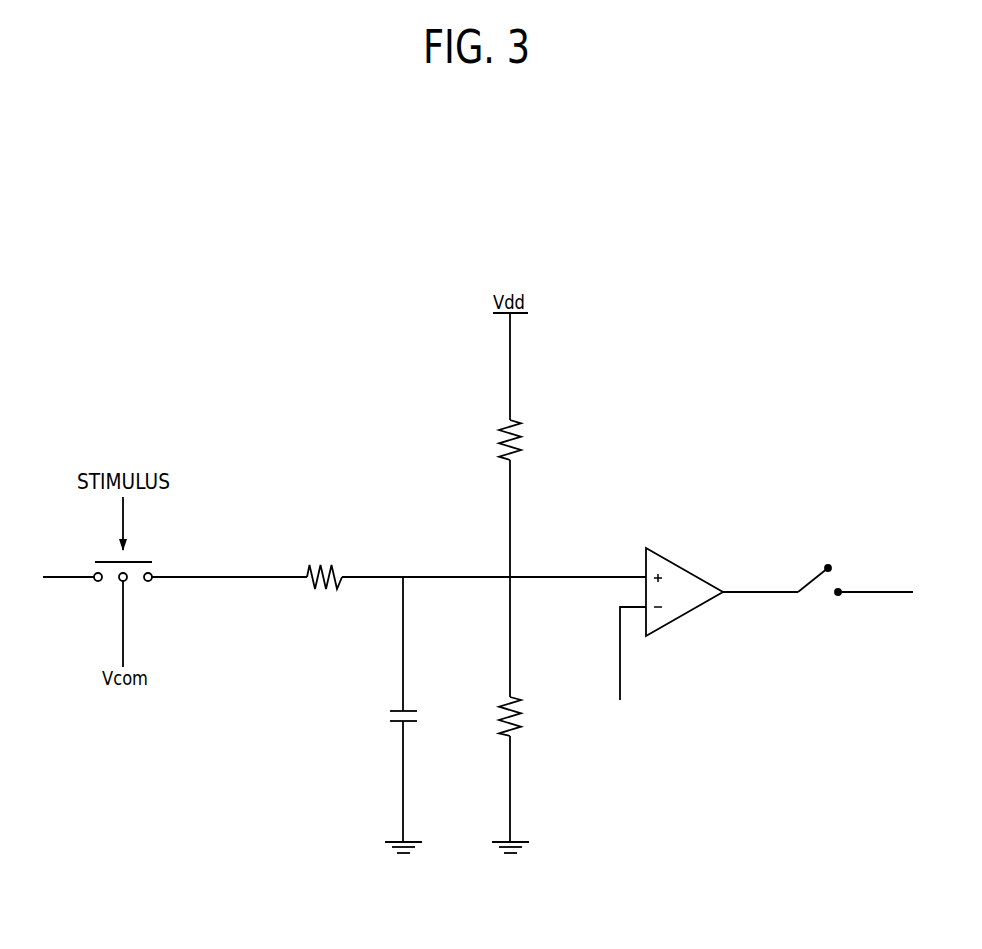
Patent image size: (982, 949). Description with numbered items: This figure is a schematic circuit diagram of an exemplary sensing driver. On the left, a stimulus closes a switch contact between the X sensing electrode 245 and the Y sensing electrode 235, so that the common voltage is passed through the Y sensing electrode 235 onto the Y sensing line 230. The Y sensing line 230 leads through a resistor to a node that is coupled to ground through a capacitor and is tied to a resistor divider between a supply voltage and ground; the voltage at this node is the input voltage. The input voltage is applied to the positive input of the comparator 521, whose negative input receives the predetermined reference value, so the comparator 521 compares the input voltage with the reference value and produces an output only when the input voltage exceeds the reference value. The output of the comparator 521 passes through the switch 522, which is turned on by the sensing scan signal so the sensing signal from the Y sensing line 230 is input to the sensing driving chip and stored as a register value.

The Y sensing line 230 is at (242, 577).
The Y sensing electrode 235 is at (151, 582).
The X sensing electrode 245 is at (95, 582).
The comparator 521 is at (675, 552).
The switch 522 is at (842, 555).